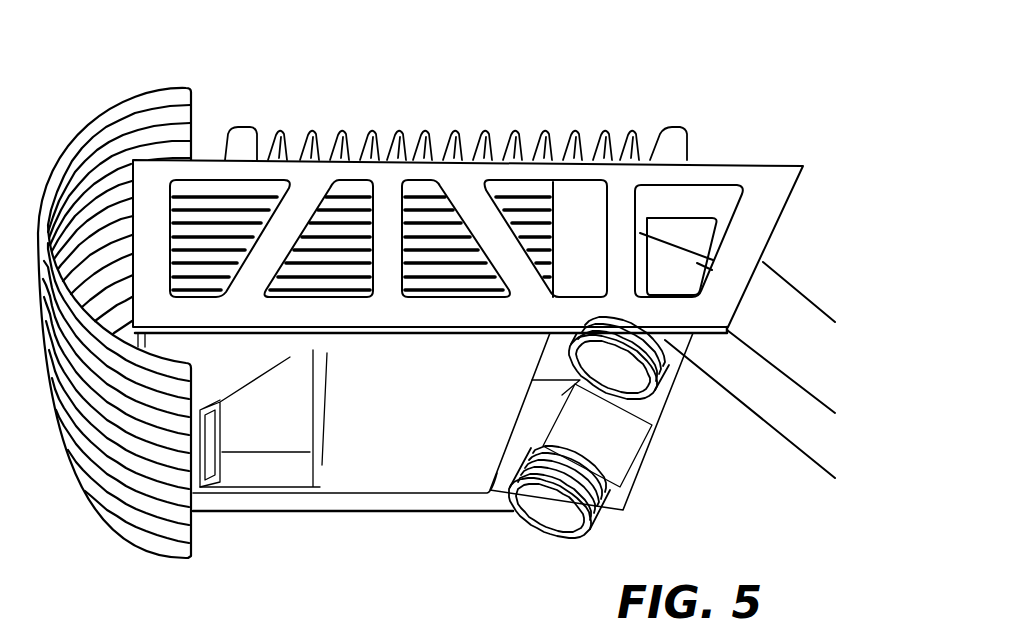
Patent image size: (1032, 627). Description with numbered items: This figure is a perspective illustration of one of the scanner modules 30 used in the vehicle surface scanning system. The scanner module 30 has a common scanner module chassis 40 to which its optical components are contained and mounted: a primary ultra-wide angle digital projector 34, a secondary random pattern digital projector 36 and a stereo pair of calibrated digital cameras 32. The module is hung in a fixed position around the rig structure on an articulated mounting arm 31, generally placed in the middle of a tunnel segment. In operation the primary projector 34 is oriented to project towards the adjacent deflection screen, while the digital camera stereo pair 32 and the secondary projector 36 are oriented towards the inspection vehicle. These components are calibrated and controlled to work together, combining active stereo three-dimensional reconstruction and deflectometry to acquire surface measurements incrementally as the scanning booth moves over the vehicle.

The scanner module 30 is at (281, 111).
The articulated mounting arm 31 is at (779, 432).
The digital camera stereo pair 32 is at (662, 397).
The primary ultra-wide angle digital projector 34 is at (353, 498).
The secondary random pattern digital projector 36 is at (207, 462).
The scanner module chassis 40 is at (717, 162).